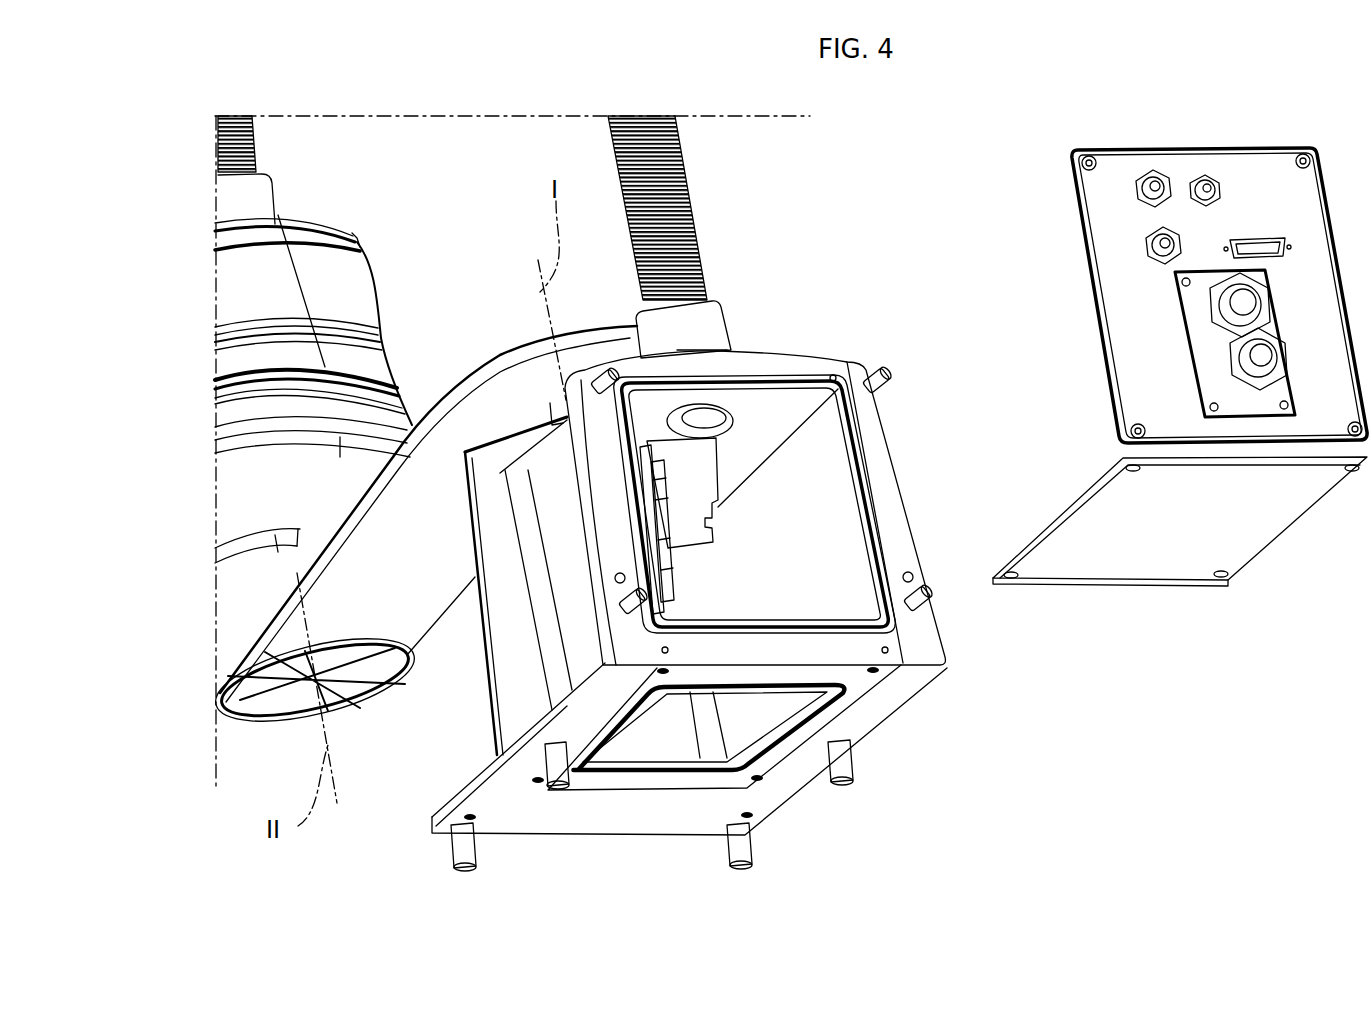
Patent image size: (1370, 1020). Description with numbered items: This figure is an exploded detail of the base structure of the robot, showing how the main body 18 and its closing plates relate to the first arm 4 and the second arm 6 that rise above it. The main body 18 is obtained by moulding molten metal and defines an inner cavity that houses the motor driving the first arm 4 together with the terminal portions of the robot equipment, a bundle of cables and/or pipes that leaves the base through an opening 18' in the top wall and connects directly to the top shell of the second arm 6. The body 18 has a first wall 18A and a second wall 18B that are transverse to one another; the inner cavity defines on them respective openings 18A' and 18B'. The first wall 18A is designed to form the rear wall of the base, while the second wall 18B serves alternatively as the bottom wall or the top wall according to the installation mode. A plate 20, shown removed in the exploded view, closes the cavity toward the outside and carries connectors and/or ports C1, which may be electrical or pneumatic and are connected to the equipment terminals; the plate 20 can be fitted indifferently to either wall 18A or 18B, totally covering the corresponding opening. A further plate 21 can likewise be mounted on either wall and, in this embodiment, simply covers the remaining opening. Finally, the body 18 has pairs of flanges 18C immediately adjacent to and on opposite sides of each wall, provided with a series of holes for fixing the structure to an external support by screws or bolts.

The second arm 6 is at (360, 290).
The first arm 4 is at (437, 425).
The main body 18 is at (689, 508).
The opening 18' is at (739, 460).
The first wall 18A is at (779, 507).
The opening of the first wall 18A' is at (796, 504).
The second wall 18B is at (765, 727).
The opening of the second wall 18B' is at (721, 774).
The flanges 18C is at (637, 636).
The connectors and/or ports C1 is at (1117, 224).
The plate 20 is at (1127, 313).
The further plate 21 is at (1122, 556).